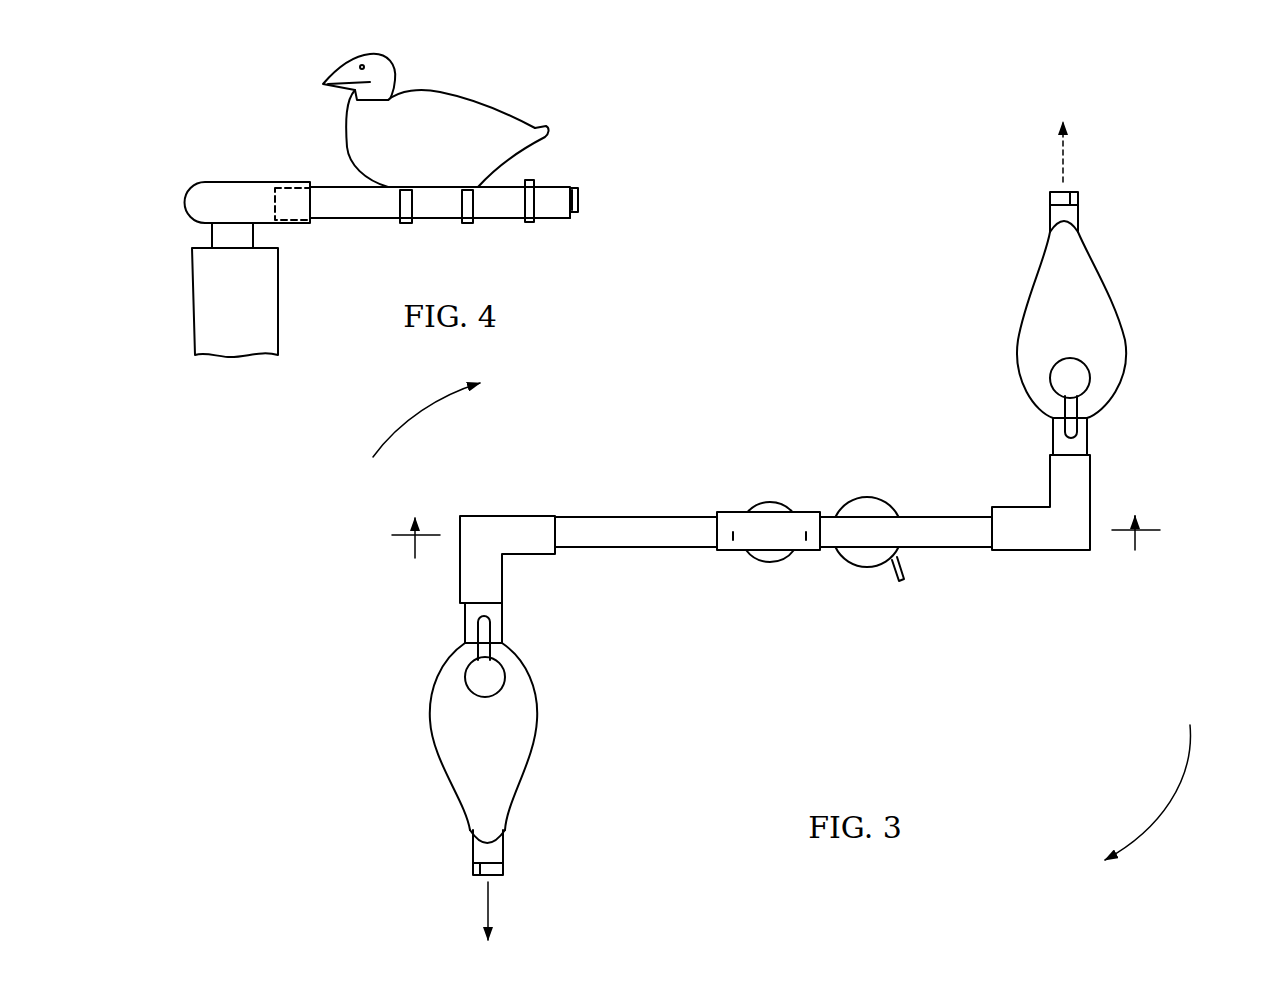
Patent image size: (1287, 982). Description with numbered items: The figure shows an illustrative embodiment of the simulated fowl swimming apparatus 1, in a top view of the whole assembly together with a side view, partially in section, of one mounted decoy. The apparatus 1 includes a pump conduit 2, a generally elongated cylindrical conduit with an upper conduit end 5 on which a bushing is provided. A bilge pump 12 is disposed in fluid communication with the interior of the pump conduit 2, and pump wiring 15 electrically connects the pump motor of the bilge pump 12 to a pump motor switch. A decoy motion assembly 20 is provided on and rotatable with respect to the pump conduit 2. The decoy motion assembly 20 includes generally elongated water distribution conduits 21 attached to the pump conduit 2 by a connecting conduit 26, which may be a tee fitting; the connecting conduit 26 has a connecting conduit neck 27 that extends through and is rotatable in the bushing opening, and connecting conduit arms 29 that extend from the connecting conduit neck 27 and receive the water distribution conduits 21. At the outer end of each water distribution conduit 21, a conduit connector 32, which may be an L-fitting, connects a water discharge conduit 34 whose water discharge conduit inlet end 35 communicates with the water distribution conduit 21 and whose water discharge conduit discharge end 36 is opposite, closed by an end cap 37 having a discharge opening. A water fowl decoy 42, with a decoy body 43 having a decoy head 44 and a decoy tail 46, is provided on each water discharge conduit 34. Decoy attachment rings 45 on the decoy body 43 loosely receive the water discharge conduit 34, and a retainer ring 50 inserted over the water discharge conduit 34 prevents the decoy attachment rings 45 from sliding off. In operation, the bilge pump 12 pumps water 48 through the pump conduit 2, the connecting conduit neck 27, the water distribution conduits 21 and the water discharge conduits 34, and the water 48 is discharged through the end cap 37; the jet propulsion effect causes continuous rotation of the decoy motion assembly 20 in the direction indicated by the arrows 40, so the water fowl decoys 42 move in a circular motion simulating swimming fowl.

In FIG. 3, the simulated fowl swimming apparatus 1 is at (707, 378).
In FIG. 4, the pump conduit 2 is at (190, 308).
In FIG. 3, the pump conduit 2 is at (767, 565).
In FIG. 3, the upper conduit end 5 is at (776, 553).
In FIG. 3, the bilge pump 12 is at (868, 505).
In FIG. 3, the pump wiring 15 is at (903, 575).
In FIG. 4, the decoy motion assembly 20 is at (375, 232).
In FIG. 3, the decoy motion assembly 20 is at (773, 523).
In FIG. 3, the water distribution conduit 21 is at (625, 555).
In FIG. 3, the connecting conduit 26 is at (724, 510).
In FIG. 4, the connecting conduit neck 27 is at (212, 230).
In FIG. 3, the connecting conduit arm 29 is at (735, 540).
In FIG. 4, the conduit connector 32 is at (228, 195).
In FIG. 3, the conduit connector 32 is at (493, 528).
In FIG. 4, the water discharge conduit 34 is at (552, 220).
In FIG. 3, the water discharge conduit 34 is at (465, 626).
In FIG. 4, the water discharge conduit inlet end 35 is at (268, 190).
In FIG. 4, the water discharge conduit discharge end 36 is at (580, 190).
In FIG. 3, the water discharge conduit discharge end 36 is at (477, 868).
In FIG. 4, the end cap 37 is at (580, 200).
In FIG. 3, the end cap 37 is at (497, 870).
In FIG. 3, the arrows 40 is at (420, 410).
In FIG. 4, the water fowl decoy 42 is at (442, 109).
In FIG. 3, the water fowl decoy 42 is at (744, 526).
In FIG. 4, the decoy body 43 is at (455, 125).
In FIG. 3, the decoy body 43 is at (455, 725).
In FIG. 4, the decoy head 44 is at (342, 92).
In FIG. 3, the decoy head 44 is at (488, 678).
In FIG. 4, the decoy attachment ring 45 is at (405, 222).
In FIG. 4, the decoy tail 46 is at (540, 130).
In FIG. 3, the decoy tail 46 is at (487, 830).
In FIG. 3, the water 48 is at (490, 913).
In FIG. 4, the retainer ring 50 is at (540, 185).